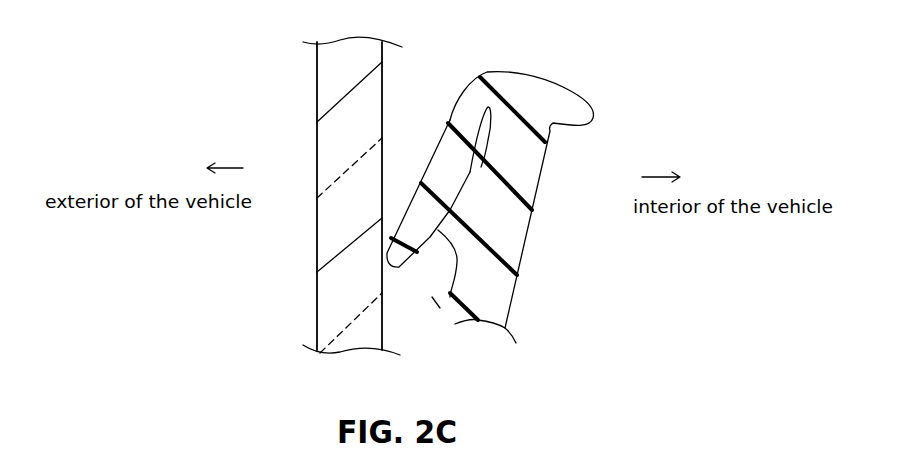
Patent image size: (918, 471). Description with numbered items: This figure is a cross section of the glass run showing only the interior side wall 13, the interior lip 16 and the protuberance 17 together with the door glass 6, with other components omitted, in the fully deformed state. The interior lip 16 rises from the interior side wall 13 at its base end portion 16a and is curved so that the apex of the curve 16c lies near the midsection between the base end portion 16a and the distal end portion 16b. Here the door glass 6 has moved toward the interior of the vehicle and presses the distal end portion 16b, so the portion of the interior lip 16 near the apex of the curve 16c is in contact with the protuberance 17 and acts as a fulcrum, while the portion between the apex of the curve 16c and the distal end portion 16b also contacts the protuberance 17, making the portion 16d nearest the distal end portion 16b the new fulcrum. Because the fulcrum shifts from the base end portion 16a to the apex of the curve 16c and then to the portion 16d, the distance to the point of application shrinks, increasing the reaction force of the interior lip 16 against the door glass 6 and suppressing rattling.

The door glass 6 is at (382, 165).
The interior side wall 13 is at (455, 271).
The interior lip 16 is at (428, 198).
The base end portion 16a is at (488, 72).
The distal end portion 16b is at (384, 282).
The apex of the curve 16c is at (457, 202).
The portion most proximate to the distal end portion 16d is at (442, 228).
The protuberance 17 is at (440, 230).